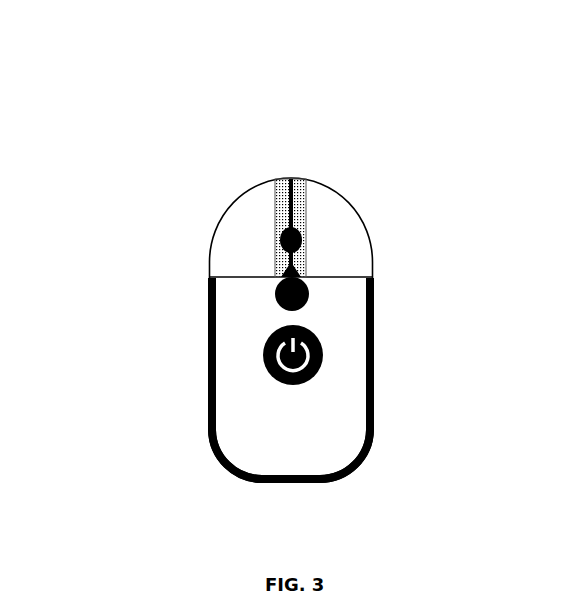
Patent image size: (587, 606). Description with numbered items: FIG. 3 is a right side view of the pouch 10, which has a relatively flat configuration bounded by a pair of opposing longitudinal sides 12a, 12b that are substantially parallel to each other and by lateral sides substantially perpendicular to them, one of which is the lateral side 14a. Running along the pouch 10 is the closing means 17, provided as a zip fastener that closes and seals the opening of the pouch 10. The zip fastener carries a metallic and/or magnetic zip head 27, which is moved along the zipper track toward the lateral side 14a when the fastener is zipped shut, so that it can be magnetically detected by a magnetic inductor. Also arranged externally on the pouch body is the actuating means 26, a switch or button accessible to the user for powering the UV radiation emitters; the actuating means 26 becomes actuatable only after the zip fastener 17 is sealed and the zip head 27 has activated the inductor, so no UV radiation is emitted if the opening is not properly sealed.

The pouch 10 is at (146, 179).
The longitudinal side 12a is at (208, 412).
The longitudinal side 12b is at (375, 414).
The lateral side 14a is at (289, 437).
The closing means 17 is at (297, 190).
The actuating means 26 is at (323, 352).
The zip head 27 is at (310, 290).